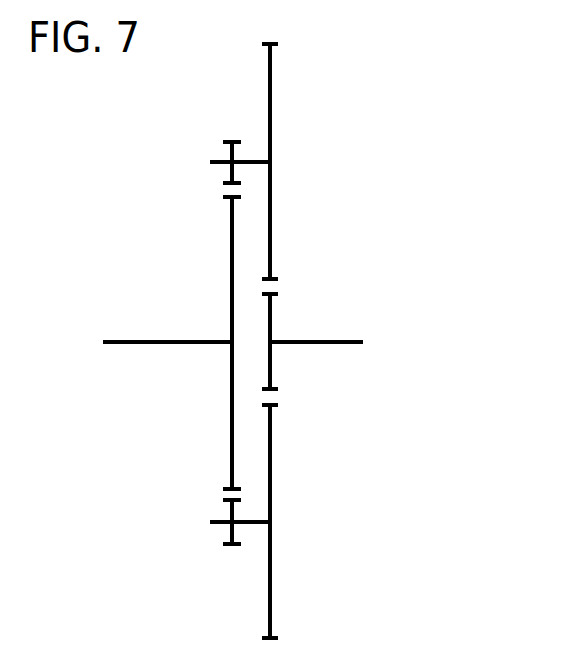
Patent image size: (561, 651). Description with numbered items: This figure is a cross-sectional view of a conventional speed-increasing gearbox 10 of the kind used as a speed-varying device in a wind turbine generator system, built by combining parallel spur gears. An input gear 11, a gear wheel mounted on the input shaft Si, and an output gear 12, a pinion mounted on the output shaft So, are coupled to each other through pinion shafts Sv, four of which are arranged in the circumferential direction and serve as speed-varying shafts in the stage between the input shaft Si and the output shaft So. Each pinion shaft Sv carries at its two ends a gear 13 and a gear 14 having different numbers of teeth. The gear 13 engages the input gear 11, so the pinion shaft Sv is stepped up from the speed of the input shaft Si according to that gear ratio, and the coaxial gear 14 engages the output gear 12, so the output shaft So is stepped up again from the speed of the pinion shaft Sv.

The speed-increasing gearbox 10 is at (453, 83).
The input gear 11 is at (230, 471).
The output gear 12 is at (272, 373).
The gear 13 is at (222, 148).
The gear 14 is at (272, 68).
The pinion shaft Sv is at (248, 158).
The input shaft Si is at (155, 340).
The output shaft So is at (333, 340).